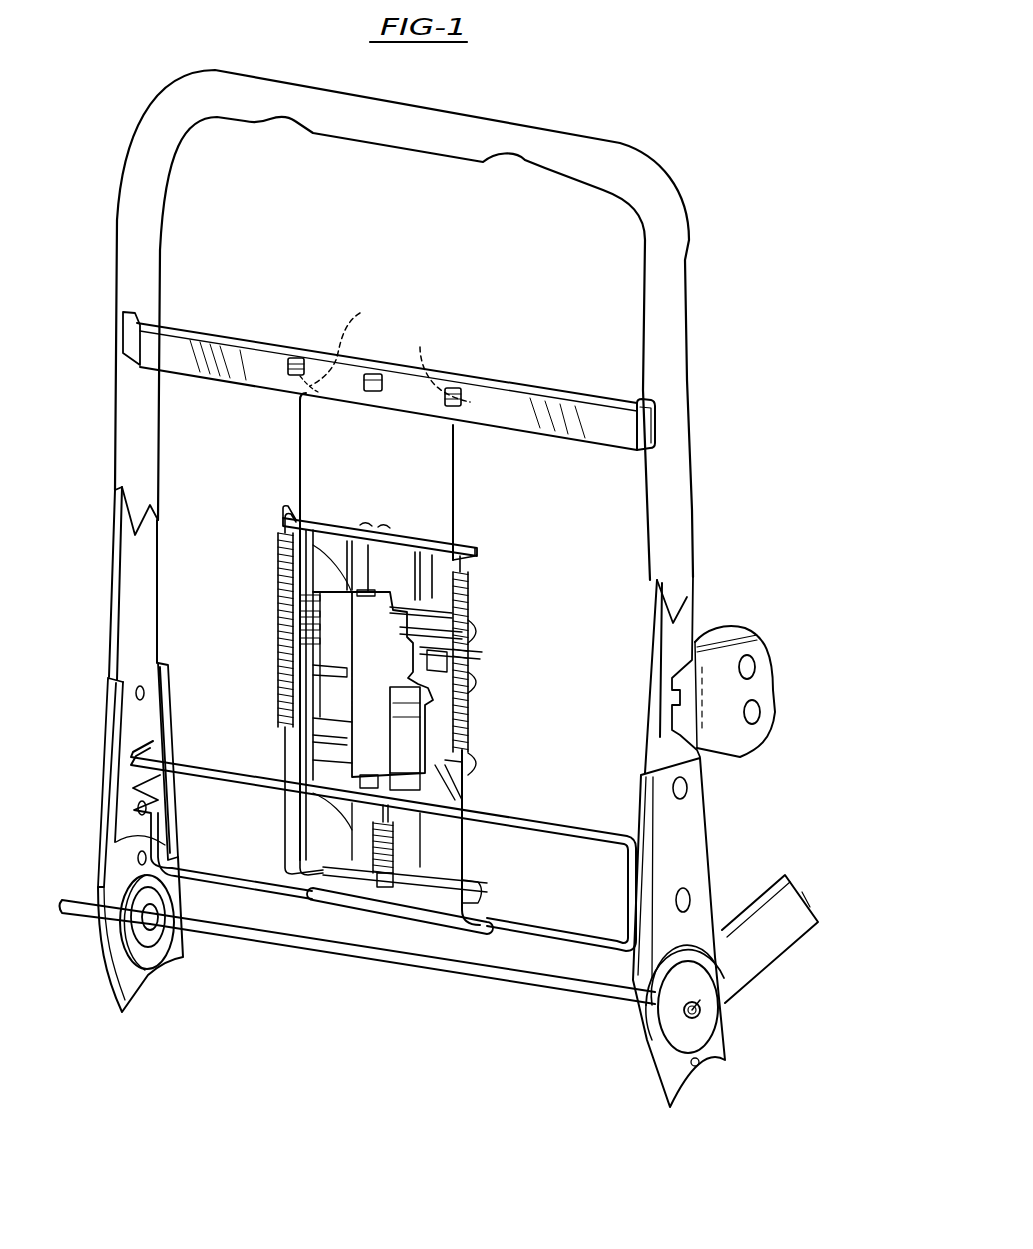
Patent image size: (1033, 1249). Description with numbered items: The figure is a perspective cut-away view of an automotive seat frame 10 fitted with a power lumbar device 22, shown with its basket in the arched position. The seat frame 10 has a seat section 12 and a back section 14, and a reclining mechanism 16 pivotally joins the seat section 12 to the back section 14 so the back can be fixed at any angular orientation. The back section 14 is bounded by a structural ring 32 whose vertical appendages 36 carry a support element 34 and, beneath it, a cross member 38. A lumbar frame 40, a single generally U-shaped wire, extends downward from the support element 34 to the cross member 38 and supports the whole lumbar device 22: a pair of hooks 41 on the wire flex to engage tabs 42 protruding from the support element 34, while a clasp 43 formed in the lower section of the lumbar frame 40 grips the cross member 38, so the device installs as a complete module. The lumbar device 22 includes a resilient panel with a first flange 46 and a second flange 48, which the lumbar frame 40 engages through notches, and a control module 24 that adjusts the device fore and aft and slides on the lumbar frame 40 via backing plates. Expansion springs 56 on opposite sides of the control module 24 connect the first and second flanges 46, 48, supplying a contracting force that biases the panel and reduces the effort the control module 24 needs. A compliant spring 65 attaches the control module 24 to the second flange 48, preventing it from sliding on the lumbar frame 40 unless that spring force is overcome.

The seat frame 10 is at (700, 108).
The seat section 12 is at (753, 970).
The back section 14 is at (712, 472).
The reclining mechanism 16 is at (688, 1012).
The power lumbar device 22 is at (526, 568).
The control module 24 is at (280, 690).
The structural ring 32 is at (696, 245).
The support element 34 is at (232, 328).
The vertical appendages 36 is at (118, 178).
The cross member 38 is at (533, 930).
The lumbar frame 40 is at (298, 460).
The hooks 41 is at (385, 351).
The tabs 42 is at (296, 356).
The clasp 43 is at (340, 903).
The first flange 46 is at (345, 520).
The second flange 48 is at (445, 925).
The expansion springs 56 is at (477, 662).
The compliant spring 65 is at (470, 818).